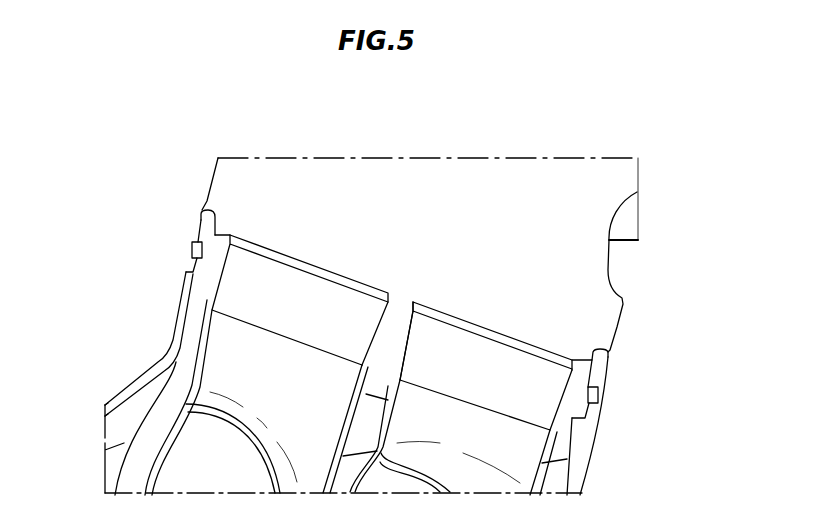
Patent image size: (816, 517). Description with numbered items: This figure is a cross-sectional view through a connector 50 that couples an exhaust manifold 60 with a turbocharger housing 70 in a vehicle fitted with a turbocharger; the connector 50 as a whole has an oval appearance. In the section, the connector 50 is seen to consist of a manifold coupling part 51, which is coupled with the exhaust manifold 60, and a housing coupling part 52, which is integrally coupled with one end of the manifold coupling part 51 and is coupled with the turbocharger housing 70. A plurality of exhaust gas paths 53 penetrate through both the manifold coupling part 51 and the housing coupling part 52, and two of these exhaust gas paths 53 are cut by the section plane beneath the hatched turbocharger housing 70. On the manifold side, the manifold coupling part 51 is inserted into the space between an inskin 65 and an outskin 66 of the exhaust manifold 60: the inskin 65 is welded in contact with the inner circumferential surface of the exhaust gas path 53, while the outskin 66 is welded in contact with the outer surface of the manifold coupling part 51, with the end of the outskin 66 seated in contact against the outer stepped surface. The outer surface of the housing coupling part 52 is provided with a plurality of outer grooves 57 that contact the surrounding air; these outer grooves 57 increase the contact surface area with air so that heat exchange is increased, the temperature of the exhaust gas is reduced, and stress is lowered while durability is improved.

The turbocharger housing 70 is at (435, 192).
The exhaust gas path 53 is at (293, 286).
The housing coupling part 52 is at (201, 215).
The outer groove 57 is at (192, 250).
The manifold coupling part 51 is at (197, 305).
The inskin 65 is at (148, 359).
The outskin 66 is at (125, 384).
The connector 50 is at (607, 372).
The exhaust manifold 60 is at (582, 467).